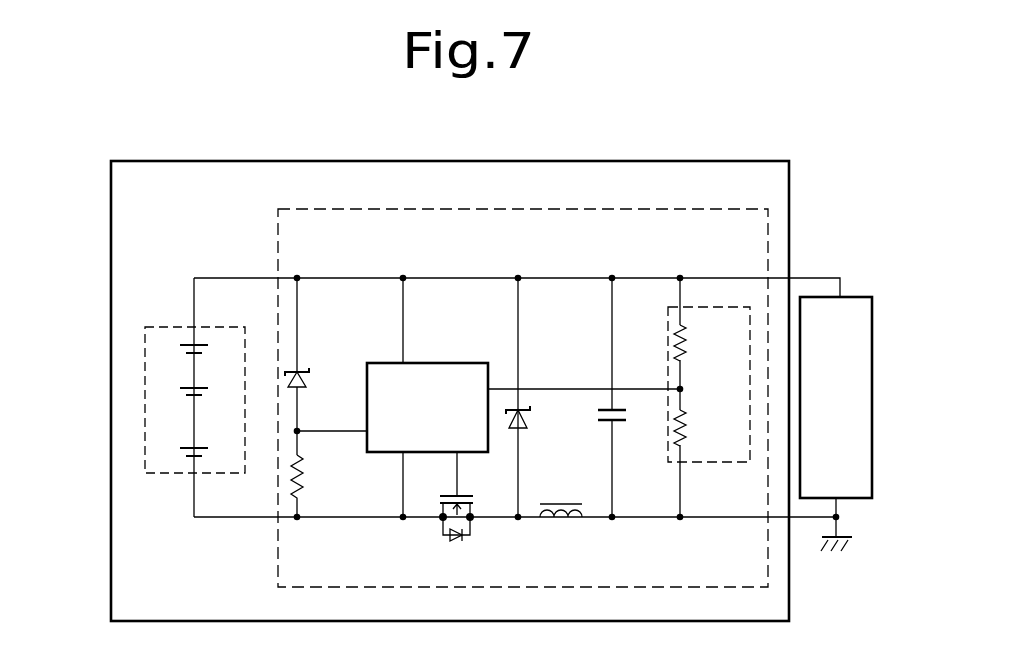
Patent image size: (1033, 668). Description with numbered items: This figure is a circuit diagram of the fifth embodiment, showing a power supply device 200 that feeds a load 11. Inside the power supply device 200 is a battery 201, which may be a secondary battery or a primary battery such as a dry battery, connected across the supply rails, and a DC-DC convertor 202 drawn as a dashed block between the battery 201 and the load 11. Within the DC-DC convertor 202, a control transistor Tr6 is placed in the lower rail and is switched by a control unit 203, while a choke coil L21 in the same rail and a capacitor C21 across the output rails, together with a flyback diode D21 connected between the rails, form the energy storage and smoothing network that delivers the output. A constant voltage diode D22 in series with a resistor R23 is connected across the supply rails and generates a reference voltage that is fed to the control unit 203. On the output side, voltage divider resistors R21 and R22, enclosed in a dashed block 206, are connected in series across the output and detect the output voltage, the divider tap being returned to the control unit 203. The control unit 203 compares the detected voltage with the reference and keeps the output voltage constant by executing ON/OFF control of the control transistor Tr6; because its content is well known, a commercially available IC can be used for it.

The power supply device 200 is at (459, 161).
The DC-DC convertor 202 is at (640, 203).
The battery 201 is at (173, 326).
The control unit 203 is at (436, 363).
The voltage divider (R21, R22) 206 is at (684, 397).
The load 11 is at (856, 296).
The constant voltage diode D22 is at (335, 360).
The resistor R23 is at (322, 486).
The control transistor Tr6 is at (459, 536).
The flyback diode D21 is at (546, 397).
The choke coil L21 is at (563, 494).
The capacitor C21 is at (631, 397).
The voltage divider resistor R21 is at (707, 344).
The voltage divider resistor R22 is at (707, 430).